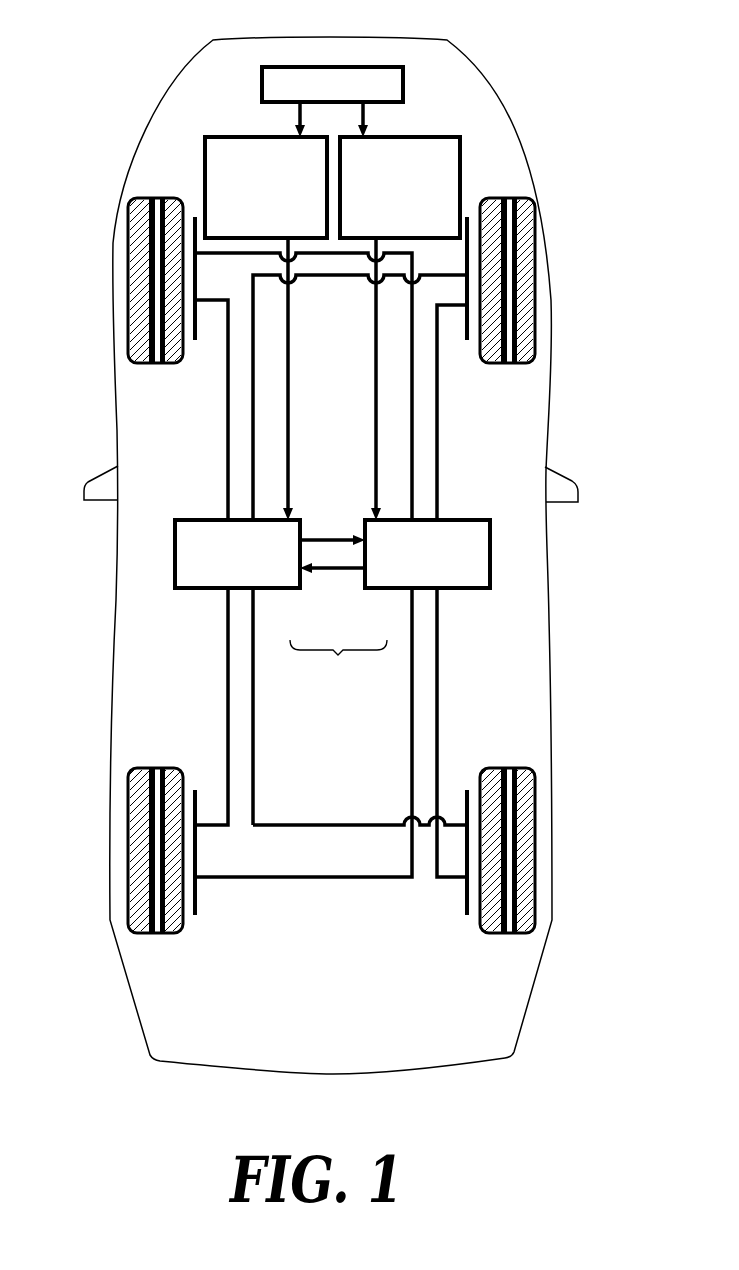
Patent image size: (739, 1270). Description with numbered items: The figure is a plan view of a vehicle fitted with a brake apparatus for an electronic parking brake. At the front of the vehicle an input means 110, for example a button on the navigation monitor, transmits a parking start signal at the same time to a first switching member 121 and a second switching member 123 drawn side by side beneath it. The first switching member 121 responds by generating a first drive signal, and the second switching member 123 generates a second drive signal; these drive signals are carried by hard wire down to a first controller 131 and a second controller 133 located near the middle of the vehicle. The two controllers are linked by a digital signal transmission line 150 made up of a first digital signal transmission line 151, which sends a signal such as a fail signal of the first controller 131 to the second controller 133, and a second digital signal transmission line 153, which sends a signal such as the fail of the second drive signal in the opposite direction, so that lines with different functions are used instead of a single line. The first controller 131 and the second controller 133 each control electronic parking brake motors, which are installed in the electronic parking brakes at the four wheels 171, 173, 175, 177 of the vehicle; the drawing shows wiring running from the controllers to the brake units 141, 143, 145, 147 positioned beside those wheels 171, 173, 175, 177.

The input means 110 is at (355, 67).
The first switching member 121 is at (240, 137).
The second switching member 123 is at (425, 137).
The first controller 131 is at (175, 541).
The second controller 133 is at (490, 540).
The first in-wheel motor (front left) 141 is at (195, 342).
The second in-wheel motor (front right) 143 is at (467, 342).
The third in-wheel motor (rear left) 145 is at (195, 905).
The fourth in-wheel motor (rear right) 147 is at (467, 898).
The digital signal transmission line 150 is at (338, 663).
The first digital signal transmission line 151 is at (330, 543).
The second digital signal transmission line 153 is at (355, 570).
The wheel 171 is at (128, 246).
The wheel 173 is at (535, 243).
The wheel 175 is at (128, 803).
The wheel 177 is at (535, 803).